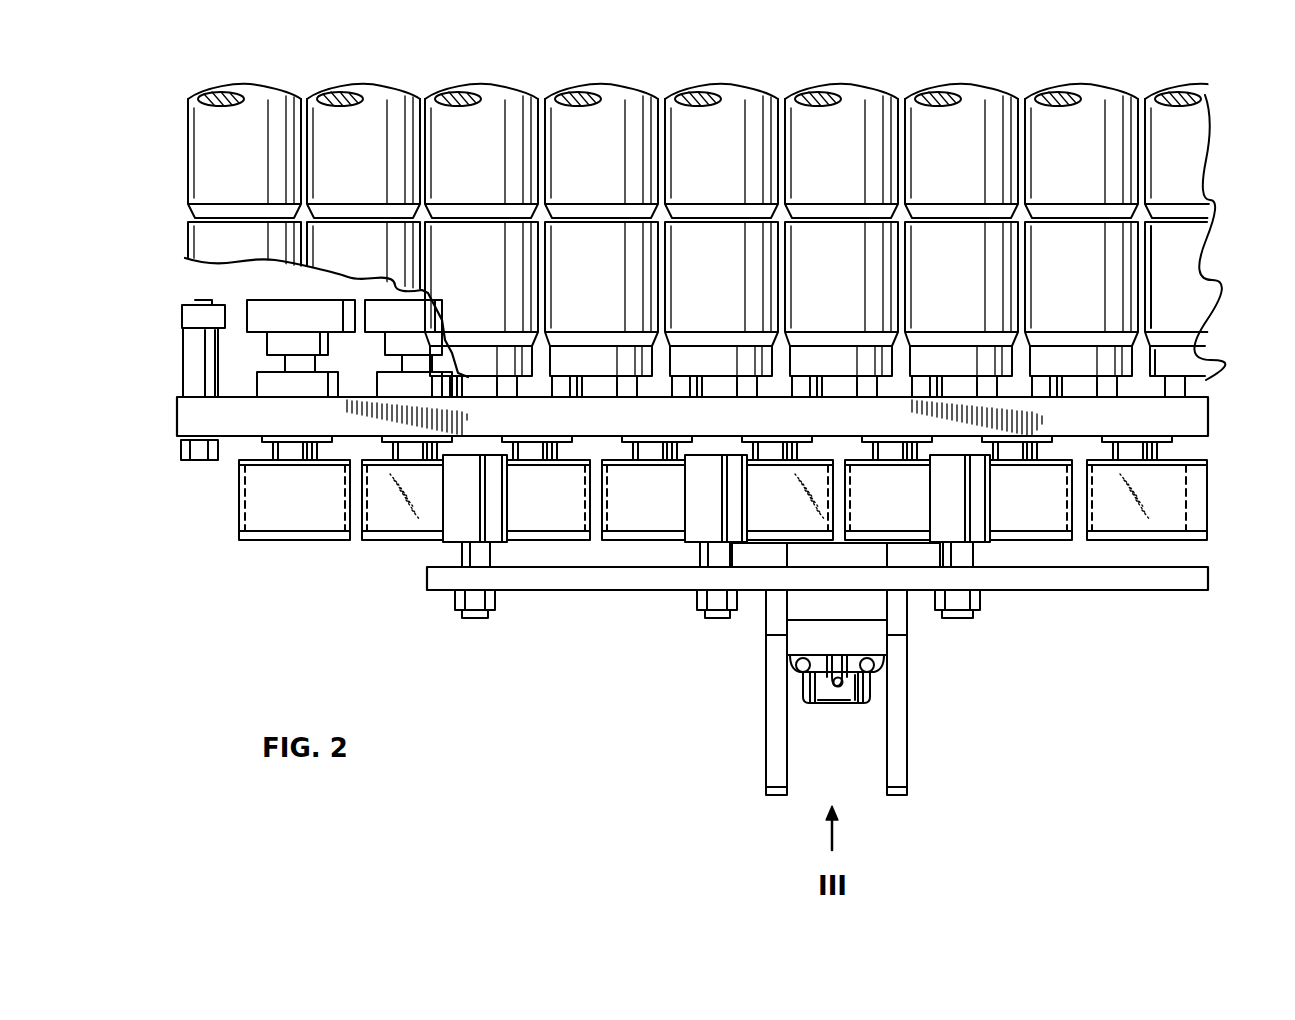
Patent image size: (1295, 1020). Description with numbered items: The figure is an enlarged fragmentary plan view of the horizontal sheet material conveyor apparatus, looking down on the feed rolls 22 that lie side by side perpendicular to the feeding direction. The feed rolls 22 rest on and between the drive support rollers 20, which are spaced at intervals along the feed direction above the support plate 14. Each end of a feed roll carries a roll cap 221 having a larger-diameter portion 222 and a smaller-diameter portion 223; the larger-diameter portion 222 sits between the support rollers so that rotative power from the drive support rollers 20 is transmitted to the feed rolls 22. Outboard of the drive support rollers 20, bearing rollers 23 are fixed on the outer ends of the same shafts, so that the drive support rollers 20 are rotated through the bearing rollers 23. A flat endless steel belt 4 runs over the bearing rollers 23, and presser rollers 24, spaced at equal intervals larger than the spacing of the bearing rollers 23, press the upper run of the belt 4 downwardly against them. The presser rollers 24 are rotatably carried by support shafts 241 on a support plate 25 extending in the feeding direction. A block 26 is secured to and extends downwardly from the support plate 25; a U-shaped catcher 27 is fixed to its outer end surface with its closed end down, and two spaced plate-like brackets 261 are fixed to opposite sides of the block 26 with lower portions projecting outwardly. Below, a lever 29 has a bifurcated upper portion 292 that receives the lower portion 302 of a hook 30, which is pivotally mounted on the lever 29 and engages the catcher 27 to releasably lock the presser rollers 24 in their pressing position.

The endless belt 4 is at (1195, 512).
The support plate 14 is at (1195, 428).
The drive support roller 20 is at (247, 316).
The feed roll 22 is at (335, 127).
The roll cap 221 is at (1200, 250).
The larger-diameter portion 222 is at (1198, 295).
The smaller-diameter portion 223 is at (1198, 360).
The bearing roller 23 is at (240, 497).
The presser roller 24 is at (455, 512).
The support shaft 241 is at (472, 557).
The support plate 25 is at (1165, 590).
The block 26 is at (808, 607).
The plate-like bracket 261 is at (775, 742).
The U-shaped catcher 27 is at (872, 665).
The lever 29 is at (862, 715).
The bifurcated upper portion 292 is at (806, 690).
The hook 30 is at (837, 688).
The lower portion 302 is at (822, 695).